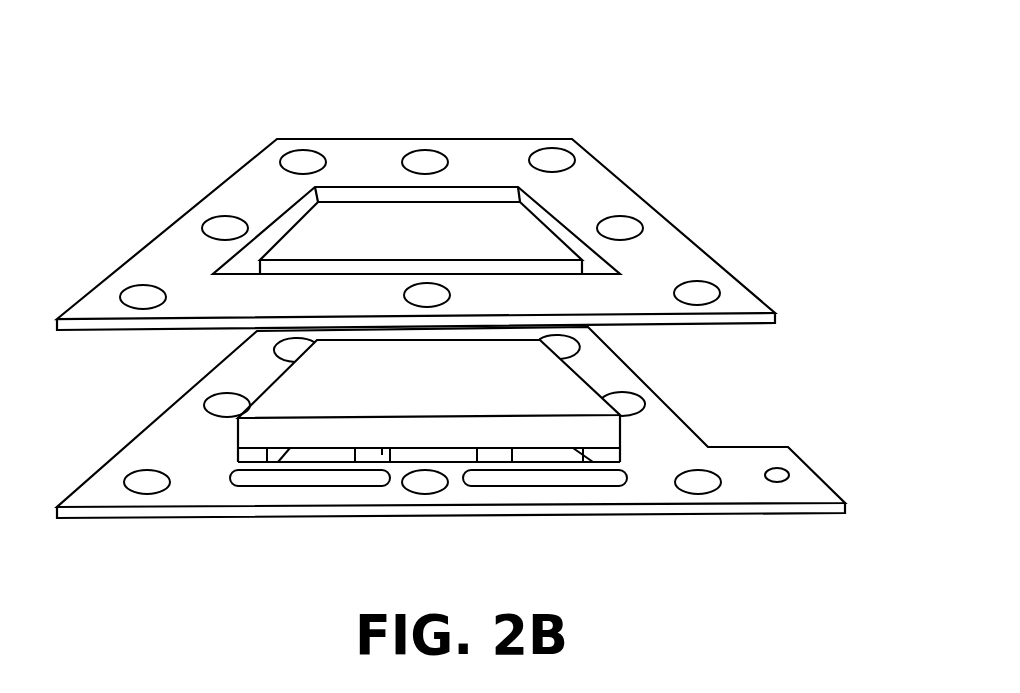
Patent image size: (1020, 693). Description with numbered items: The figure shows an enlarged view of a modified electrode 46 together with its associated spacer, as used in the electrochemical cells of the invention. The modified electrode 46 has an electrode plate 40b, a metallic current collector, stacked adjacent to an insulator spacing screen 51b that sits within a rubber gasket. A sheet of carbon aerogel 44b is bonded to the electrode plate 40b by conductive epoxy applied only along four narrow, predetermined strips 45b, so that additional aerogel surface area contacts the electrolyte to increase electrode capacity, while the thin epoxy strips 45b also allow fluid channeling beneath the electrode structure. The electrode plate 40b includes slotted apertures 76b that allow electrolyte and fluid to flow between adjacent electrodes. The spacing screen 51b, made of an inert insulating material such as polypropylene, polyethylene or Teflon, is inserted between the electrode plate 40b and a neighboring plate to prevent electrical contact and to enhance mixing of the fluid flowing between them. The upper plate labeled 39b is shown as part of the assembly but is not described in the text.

The modified electrode 46 is at (451, 343).
The upper spacer plate 39b is at (429, 234).
The electrode plate 40b is at (451, 449).
The insulator spacing screen 51b is at (448, 242).
The carbon aerogel 44b is at (429, 454).
The strips 45b is at (267, 455).
The slotted apertures 76b is at (255, 487).